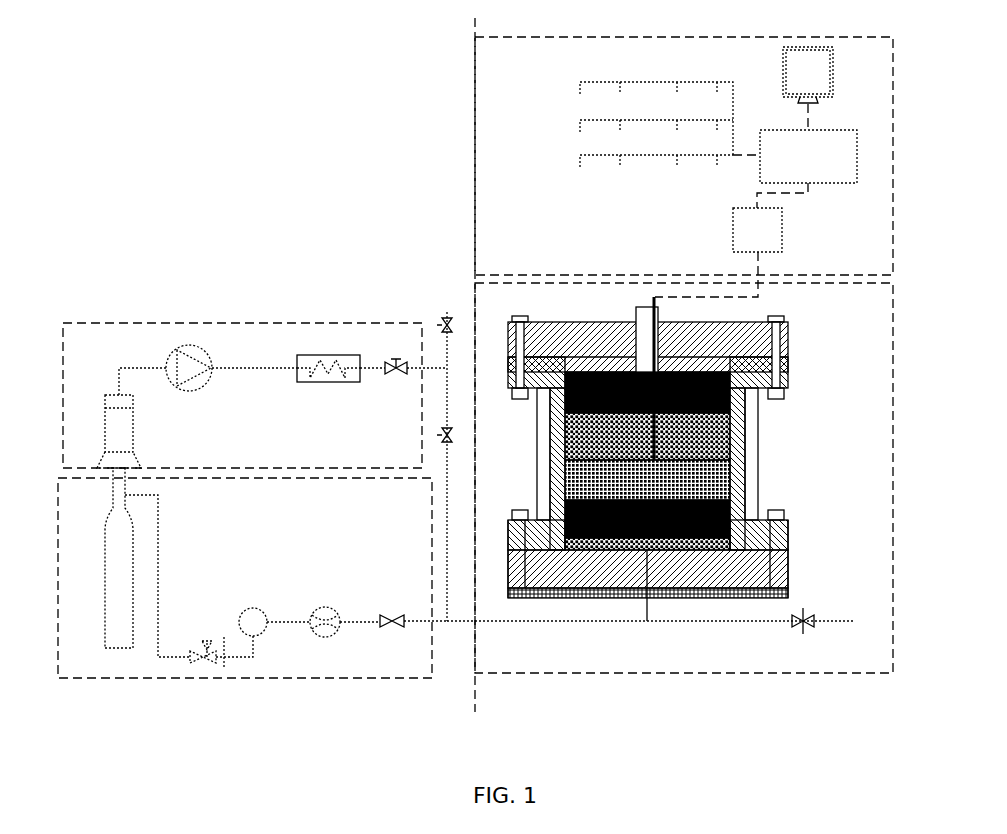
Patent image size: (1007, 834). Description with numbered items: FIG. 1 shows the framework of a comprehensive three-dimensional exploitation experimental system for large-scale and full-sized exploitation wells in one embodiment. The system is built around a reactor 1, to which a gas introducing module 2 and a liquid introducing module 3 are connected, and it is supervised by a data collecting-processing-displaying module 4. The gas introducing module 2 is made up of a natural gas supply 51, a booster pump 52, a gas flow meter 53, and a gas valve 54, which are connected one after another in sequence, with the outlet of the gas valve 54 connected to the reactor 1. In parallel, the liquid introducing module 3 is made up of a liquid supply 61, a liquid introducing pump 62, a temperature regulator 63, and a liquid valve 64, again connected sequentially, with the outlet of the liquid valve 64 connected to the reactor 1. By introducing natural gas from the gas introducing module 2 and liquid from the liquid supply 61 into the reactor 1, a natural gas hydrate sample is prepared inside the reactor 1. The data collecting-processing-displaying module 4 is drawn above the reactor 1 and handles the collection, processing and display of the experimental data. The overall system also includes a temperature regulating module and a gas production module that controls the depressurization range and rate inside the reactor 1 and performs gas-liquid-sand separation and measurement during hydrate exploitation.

The reactor 1 is at (893, 522).
The gas introducing module 2 is at (432, 678).
The liquid introducing module 3 is at (63, 323).
The data collecting-processing-displaying module 4 is at (893, 168).
The natural gas supply 51 is at (105, 590).
The booster pump 52 is at (245, 612).
The gas flow meter 53 is at (328, 607).
The gas valve 54 is at (392, 612).
The liquid supply 61 is at (105, 425).
The liquid introducing pump 62 is at (205, 385).
The temperature regulator 63 is at (325, 382).
The liquid valve 64 is at (398, 375).